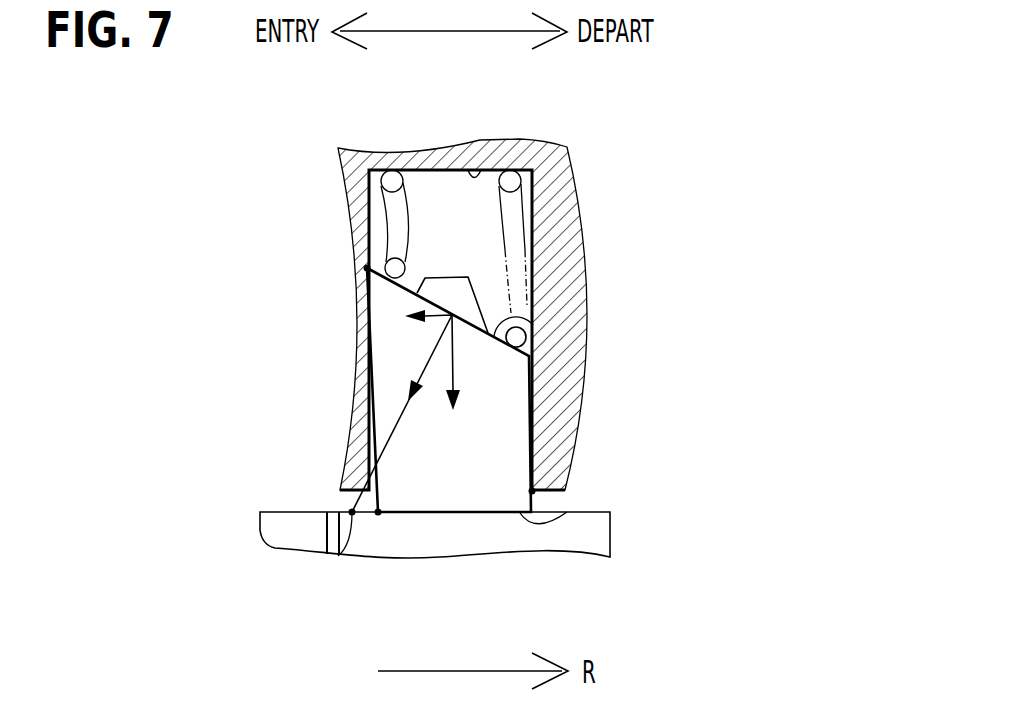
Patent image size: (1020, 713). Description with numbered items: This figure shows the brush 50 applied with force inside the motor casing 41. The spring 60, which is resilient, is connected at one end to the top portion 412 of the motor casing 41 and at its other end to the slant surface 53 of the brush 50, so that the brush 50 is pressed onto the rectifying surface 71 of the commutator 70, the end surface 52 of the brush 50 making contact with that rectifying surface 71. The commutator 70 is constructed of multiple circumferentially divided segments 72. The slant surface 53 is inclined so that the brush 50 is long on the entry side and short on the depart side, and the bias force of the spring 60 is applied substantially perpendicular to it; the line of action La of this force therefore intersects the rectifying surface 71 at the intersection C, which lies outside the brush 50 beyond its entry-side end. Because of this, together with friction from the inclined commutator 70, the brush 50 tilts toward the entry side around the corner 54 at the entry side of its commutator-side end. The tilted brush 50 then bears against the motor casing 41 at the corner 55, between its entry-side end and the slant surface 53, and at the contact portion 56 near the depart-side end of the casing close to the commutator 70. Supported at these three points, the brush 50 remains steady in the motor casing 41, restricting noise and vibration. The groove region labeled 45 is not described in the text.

The motor casing 41 is at (357, 150).
The top portion of the motor casing 412 is at (478, 172).
The entry-side groove 45 is at (350, 245).
The corner 55 is at (366, 268).
The spring 60 is at (527, 222).
The slant surface 53 is at (528, 314).
The brush 50 is at (478, 437).
The contact portion 56 is at (573, 468).
The end surface of the brush 52 is at (567, 512).
The corner 54 is at (378, 512).
The rectifying surface 71 is at (298, 510).
The segments 72 is at (293, 533).
The commutator 70 is at (630, 542).
The line of action La is at (388, 430).
The intersection C is at (338, 556).